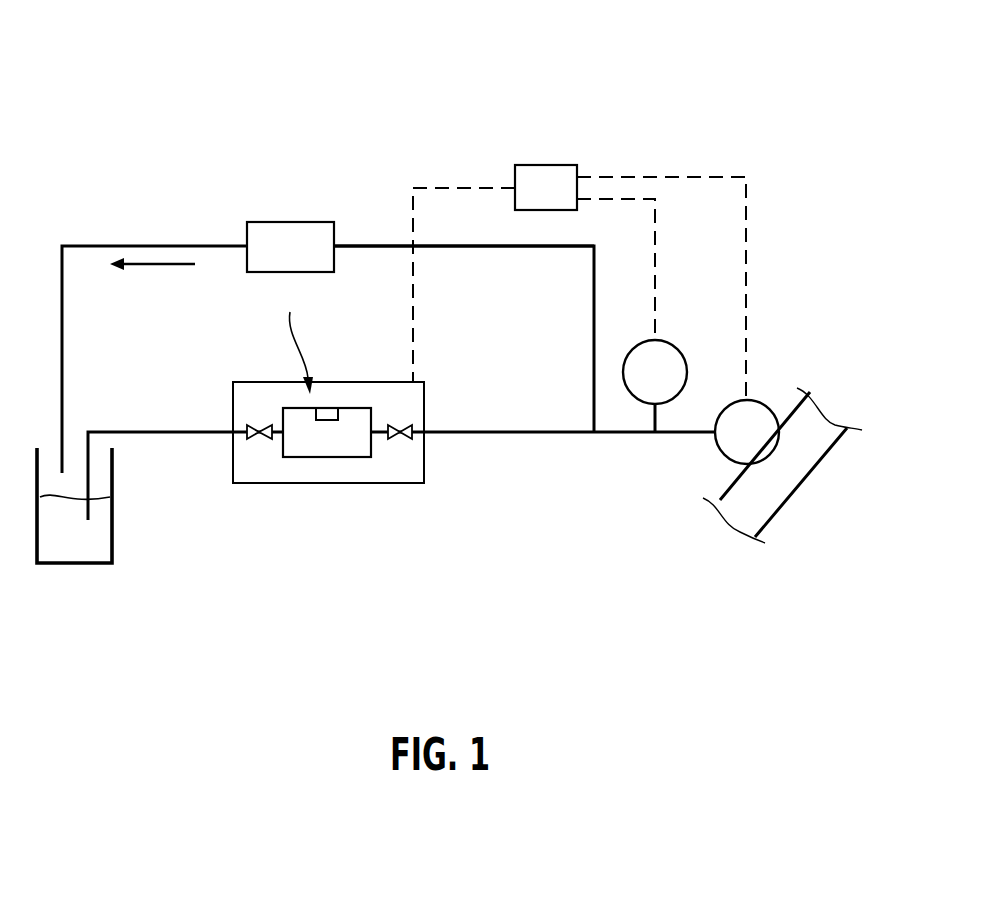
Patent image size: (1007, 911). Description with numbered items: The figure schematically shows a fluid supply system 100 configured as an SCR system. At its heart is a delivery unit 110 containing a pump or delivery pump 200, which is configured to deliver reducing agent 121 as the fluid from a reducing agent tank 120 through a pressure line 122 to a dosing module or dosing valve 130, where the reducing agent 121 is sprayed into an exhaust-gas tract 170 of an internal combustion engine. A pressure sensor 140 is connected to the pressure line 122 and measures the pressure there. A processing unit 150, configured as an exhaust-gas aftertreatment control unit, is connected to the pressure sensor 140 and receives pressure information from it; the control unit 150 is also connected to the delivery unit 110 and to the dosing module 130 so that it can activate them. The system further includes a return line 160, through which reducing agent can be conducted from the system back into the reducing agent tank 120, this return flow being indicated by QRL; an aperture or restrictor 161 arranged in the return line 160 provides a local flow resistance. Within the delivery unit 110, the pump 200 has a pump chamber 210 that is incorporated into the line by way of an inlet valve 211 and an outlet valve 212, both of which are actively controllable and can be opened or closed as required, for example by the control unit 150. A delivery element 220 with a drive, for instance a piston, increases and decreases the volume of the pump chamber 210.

The fluid supply system 100 is at (130, 116).
The delivery unit 110 is at (253, 388).
The reducing agent tank 120 is at (112, 470).
The reducing agent 121 is at (98, 540).
The pressure line 122 is at (530, 430).
The dosing module or dosing valve 130 is at (760, 412).
The pressure sensor 140 is at (668, 352).
The processing unit 150 is at (551, 172).
The return line 160 is at (375, 246).
The aperture or restrictor 161 is at (287, 230).
The exhaust-gas tract 170 is at (790, 470).
The pump or delivery pump 200 is at (292, 335).
The pump chamber 210 is at (327, 445).
The inlet valve 211 is at (258, 440).
The outlet valve 212 is at (397, 440).
The delivery element 220 is at (330, 405).
The return flow QRL is at (162, 280).